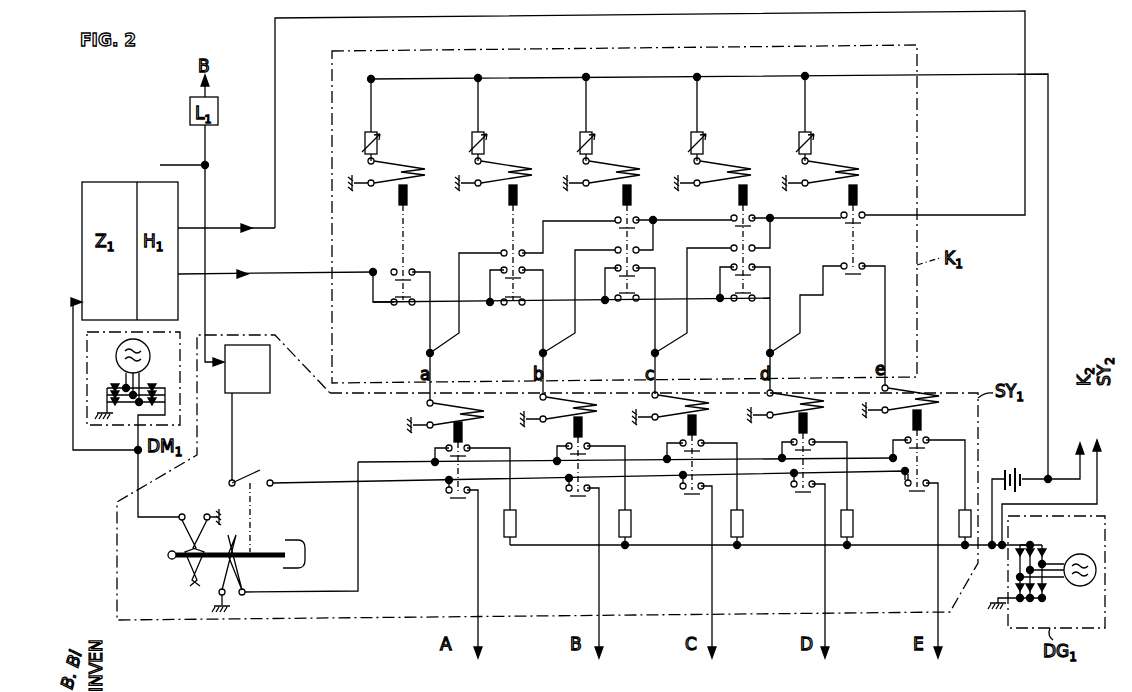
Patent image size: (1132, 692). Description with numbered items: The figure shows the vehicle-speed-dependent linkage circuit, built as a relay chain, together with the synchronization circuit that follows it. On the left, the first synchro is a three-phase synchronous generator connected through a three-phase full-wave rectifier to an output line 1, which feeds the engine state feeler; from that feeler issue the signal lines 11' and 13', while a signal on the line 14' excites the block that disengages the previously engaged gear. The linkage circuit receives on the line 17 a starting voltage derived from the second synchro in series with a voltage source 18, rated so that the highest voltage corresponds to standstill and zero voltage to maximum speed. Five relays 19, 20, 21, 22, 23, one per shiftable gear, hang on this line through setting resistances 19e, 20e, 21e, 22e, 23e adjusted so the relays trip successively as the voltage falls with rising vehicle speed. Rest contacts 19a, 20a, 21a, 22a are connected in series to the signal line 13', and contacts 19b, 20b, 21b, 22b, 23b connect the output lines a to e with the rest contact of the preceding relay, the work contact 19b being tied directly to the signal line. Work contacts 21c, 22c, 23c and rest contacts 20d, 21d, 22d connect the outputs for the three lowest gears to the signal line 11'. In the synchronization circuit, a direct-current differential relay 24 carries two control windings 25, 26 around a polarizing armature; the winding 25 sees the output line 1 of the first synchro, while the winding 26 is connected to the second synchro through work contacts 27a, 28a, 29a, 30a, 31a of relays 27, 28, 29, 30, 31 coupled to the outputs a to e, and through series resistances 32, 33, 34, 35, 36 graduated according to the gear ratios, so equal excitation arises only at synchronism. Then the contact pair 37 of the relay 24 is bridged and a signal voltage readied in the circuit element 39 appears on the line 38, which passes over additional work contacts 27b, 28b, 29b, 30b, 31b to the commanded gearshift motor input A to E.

The output line 1 is at (130, 453).
The signal line 11' is at (623, 119).
The signal line 13' is at (275, 288).
The line 14' is at (171, 144).
The line 17 is at (1048, 259).
The voltage source 18 is at (1012, 466).
The relay 19 is at (418, 239).
The rest contact 19a is at (402, 306).
The work contact 19b is at (394, 268).
The setting resistance 19e is at (365, 147).
The relay 20 is at (528, 236).
The rest contact 20a is at (514, 306).
The contact 20b is at (502, 266).
The rest contact 20d is at (525, 250).
The setting resistance 20e is at (472, 147).
The relay 21 is at (640, 234).
The rest contact 21a is at (628, 303).
The contact 21b is at (615, 263).
The work contact 21c is at (652, 207).
The rest contact 21d is at (640, 246).
The setting resistance 21e is at (580, 147).
The relay 22 is at (750, 233).
The rest contact 22a is at (744, 303).
The contact 22b is at (732, 263).
The work contact 22c is at (768, 206).
The rest contact 22d is at (756, 244).
The setting resistance 22e is at (691, 147).
The relay 23 is at (833, 230).
The contact 23b is at (844, 262).
The work contact 23c is at (878, 206).
The setting resistance 23e is at (799, 147).
The direct-current differential relay 24 is at (244, 537).
The control winding 25 is at (180, 543).
The control winding 26 is at (246, 540).
The relay 27 is at (458, 529).
The work contact 27a is at (469, 446).
The work contact 27b is at (448, 496).
The relay 28 is at (594, 526).
The work contact 28a is at (598, 436).
The work contact 28b is at (572, 494).
The relay 29 is at (705, 525).
The work contact 29a is at (703, 442).
The work contact 29b is at (684, 492).
The relay 30 is at (818, 524).
The work contact 30a is at (823, 432).
The work contact 30b is at (796, 490).
The relay 31 is at (916, 521).
The work contact 31a is at (936, 430).
The work contact 31b is at (908, 490).
The series resistance 32 is at (518, 526).
The series resistance 33 is at (633, 526).
The series resistance 34 is at (745, 524).
The series resistance 35 is at (855, 524).
The series resistance 36 is at (960, 515).
The contact pair 37 is at (270, 478).
The line 38 is at (325, 481).
The circuit element 39 is at (250, 393).